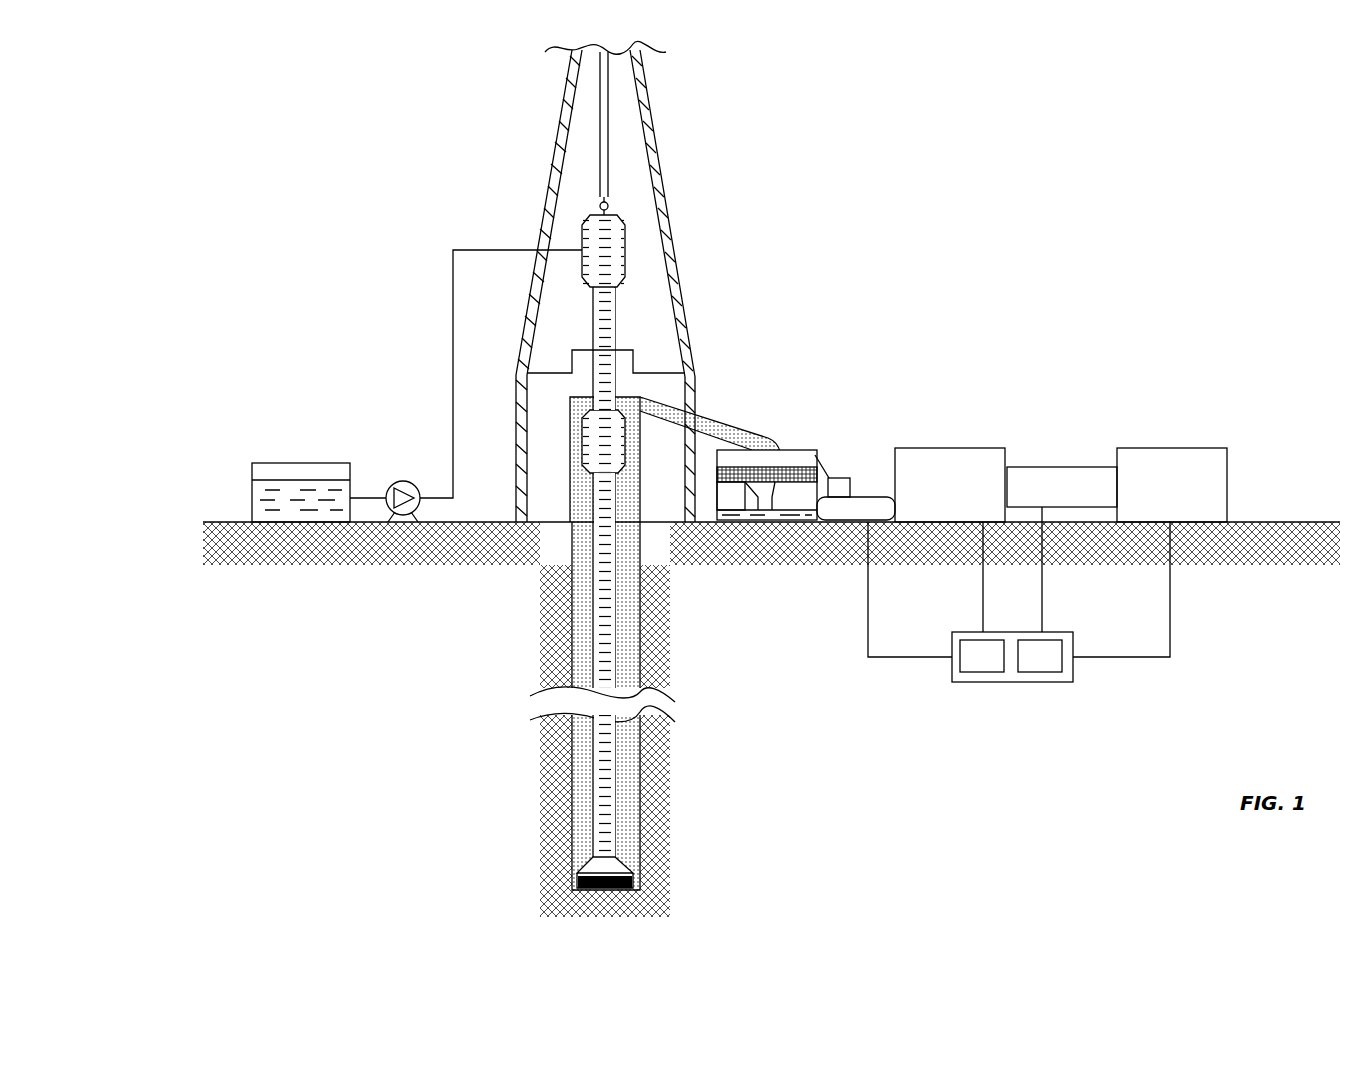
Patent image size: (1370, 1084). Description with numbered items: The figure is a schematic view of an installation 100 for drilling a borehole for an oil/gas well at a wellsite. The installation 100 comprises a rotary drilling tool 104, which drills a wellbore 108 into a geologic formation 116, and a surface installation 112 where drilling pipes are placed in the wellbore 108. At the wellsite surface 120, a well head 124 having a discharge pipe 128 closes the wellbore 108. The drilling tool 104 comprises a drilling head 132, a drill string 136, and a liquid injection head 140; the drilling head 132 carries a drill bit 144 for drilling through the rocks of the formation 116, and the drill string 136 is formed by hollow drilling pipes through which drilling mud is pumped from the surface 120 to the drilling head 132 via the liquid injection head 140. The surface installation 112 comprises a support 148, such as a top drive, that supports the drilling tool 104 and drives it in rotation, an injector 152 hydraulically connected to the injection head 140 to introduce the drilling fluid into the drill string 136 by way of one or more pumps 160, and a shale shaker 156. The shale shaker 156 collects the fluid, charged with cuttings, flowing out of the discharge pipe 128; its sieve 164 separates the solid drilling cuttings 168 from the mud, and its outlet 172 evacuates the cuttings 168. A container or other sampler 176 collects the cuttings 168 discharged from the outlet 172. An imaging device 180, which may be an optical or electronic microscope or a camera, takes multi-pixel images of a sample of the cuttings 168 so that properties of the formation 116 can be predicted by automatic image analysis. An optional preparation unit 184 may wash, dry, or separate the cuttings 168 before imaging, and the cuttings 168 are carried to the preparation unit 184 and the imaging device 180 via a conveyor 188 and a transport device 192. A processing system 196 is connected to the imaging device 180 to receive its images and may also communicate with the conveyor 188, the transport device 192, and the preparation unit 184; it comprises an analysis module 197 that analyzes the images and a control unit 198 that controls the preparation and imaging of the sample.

The installation 100 is at (934, 136).
The rotary drilling tool 104 is at (583, 616).
The wellbore 108 is at (568, 760).
The surface installation 112 is at (402, 298).
The geologic formation 116 is at (656, 800).
The wellsite surface 120 is at (216, 517).
The well head 124 is at (651, 390).
The discharge pipe 128 is at (713, 420).
The drilling head 132 is at (582, 867).
The drill string 136 is at (593, 626).
The liquid injection head 140 is at (628, 238).
The drill bit 144 is at (605, 893).
The support 148 is at (569, 356).
The injector 152 is at (287, 456).
The shale shaker 156 is at (774, 428).
The pump 160 is at (399, 481).
The sieve 164 is at (735, 500).
The drilling cuttings 168 is at (798, 450).
The outlet 172 is at (824, 456).
The sampler 176 is at (850, 480).
The imaging device 180 is at (1152, 499).
The preparation unit 184 is at (928, 499).
The conveyor 188 is at (835, 505).
The transport device 192 is at (1044, 501).
The processing system 196 is at (952, 676).
The analysis module 197 is at (986, 672).
The control unit 198 is at (1044, 672).